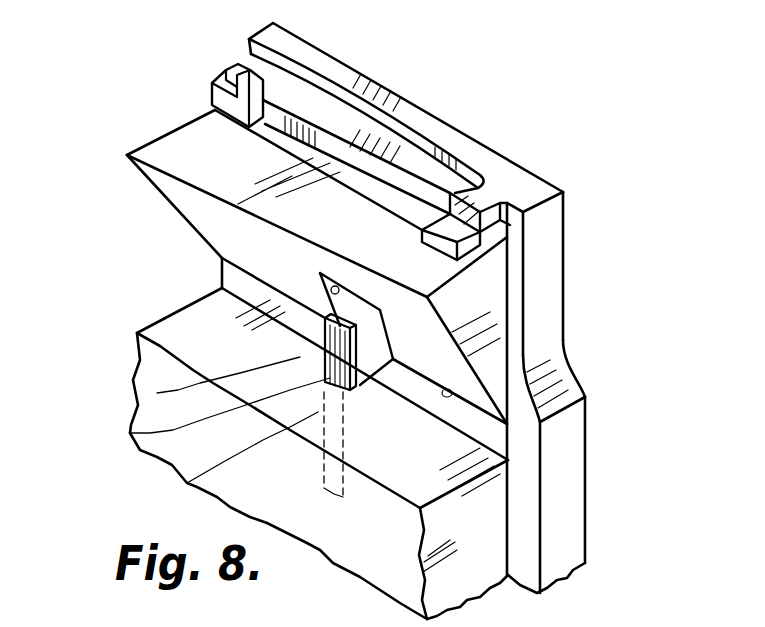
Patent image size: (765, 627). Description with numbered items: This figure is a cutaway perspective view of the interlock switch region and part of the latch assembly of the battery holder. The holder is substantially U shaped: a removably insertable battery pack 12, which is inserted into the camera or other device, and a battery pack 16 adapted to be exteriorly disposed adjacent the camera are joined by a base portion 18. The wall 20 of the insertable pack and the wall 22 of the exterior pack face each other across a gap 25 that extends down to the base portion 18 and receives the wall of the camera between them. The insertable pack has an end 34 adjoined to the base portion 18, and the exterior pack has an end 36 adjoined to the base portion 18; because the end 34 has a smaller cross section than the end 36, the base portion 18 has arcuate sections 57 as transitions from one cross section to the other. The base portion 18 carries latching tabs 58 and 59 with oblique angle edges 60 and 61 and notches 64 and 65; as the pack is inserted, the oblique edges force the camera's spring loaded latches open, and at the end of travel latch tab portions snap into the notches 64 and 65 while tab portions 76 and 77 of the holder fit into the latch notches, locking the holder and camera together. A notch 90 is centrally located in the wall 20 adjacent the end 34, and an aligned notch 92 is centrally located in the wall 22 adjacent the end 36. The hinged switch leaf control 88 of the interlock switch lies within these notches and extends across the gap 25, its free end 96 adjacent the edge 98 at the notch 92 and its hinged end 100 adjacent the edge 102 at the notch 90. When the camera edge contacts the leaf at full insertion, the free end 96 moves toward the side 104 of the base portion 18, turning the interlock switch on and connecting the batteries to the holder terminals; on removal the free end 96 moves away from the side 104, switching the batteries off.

The removably insertable battery pack 12 is at (497, 323).
The battery pack adapted to be exteriorly disposed 16 is at (482, 545).
The base portion 18 is at (523, 445).
The wall 20 is at (222, 280).
The wall 22 is at (173, 337).
The gap 25 is at (222, 262).
The end 34 is at (507, 290).
The end 36 is at (500, 500).
The arcuate sections 57 is at (573, 379).
The latching tab 58 is at (422, 230).
The latching tab 59 is at (352, 68).
The oblique angle edge 60 is at (532, 188).
The oblique angle edge 61 is at (212, 74).
The notch 64 is at (478, 198).
The notch 65 is at (282, 78).
The tab portion 76 is at (505, 230).
The tab portion 77 is at (210, 48).
The hinged switch leaf control 88 is at (130, 433).
The notch 90 is at (335, 278).
The notch 92 is at (362, 378).
The free end 96 is at (157, 393).
The edge 98 is at (187, 483).
The hinged end 100 is at (190, 372).
The edge 102 is at (340, 315).
The side 104 is at (490, 352).